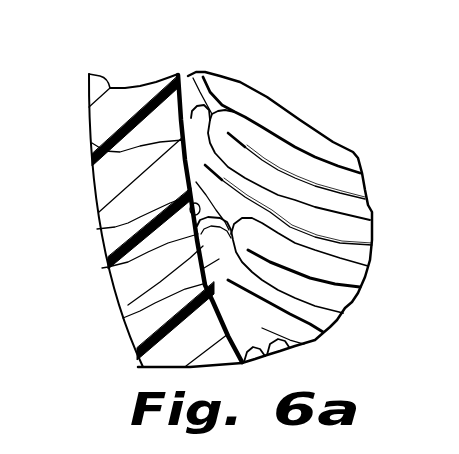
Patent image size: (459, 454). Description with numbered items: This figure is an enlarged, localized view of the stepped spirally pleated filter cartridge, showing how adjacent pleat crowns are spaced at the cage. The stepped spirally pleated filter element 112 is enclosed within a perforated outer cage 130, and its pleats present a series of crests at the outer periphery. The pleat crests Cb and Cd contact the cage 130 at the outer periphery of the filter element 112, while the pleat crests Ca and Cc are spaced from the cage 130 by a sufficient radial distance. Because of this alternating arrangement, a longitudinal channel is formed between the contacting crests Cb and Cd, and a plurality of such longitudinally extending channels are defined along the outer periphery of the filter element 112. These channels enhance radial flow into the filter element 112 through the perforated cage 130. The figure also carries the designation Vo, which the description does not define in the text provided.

The pleat crest Ca is at (190, 77).
The pleat crest Cb is at (92, 143).
The outlet velocity / channel Vo is at (97, 229).
The pleat crest Cc is at (102, 268).
The pleat crest Cd is at (123, 318).
The perforated outer cage 130 is at (146, 227).
The stepped spirally pleated filter element 112 is at (298, 141).